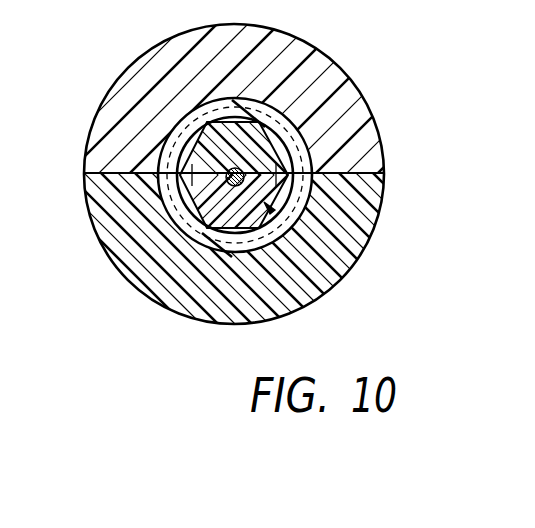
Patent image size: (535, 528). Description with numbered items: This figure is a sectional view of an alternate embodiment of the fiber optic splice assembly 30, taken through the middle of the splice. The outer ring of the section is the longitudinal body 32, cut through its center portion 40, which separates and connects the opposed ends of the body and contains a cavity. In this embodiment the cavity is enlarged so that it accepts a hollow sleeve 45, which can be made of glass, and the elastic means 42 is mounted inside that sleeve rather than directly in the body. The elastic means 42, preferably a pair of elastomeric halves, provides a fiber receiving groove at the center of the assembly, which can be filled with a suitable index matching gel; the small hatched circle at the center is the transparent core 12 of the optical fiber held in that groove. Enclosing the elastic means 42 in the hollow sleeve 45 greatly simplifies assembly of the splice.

The fiber optic splice assembly 30 is at (380, 76).
The longitudinal body 32 is at (73, 86).
The center portion 40 is at (157, 44).
The elastic means 42 is at (290, 135).
The hollow sleeve 45 is at (307, 153).
The transparent core 12 is at (228, 182).